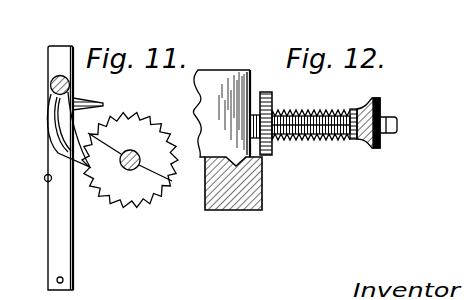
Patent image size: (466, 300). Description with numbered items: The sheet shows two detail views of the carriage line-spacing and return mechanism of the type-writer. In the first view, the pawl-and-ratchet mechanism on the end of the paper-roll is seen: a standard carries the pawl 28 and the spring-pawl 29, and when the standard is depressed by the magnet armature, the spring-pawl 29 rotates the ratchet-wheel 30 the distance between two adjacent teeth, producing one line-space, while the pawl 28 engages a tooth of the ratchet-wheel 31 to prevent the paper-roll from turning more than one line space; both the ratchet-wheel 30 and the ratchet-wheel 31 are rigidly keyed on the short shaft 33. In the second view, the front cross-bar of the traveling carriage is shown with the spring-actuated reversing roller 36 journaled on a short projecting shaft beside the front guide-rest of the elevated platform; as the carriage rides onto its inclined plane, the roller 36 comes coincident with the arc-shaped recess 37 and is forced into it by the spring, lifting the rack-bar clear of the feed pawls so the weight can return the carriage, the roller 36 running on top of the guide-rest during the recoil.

In FIG. 11, the pawl 28 is at (95, 102).
In FIG. 11, the spring-pawl 29 is at (72, 160).
In FIG. 11, the ratchet-wheel 30 is at (130, 160).
In FIG. 11, the ratchet-wheel 31 is at (130, 156).
In FIG. 11, the short shaft 33 is at (140, 157).
In FIG. 12, the roller 36 is at (270, 94).
In FIG. 12, the arc-shaped recess 37 is at (312, 113).